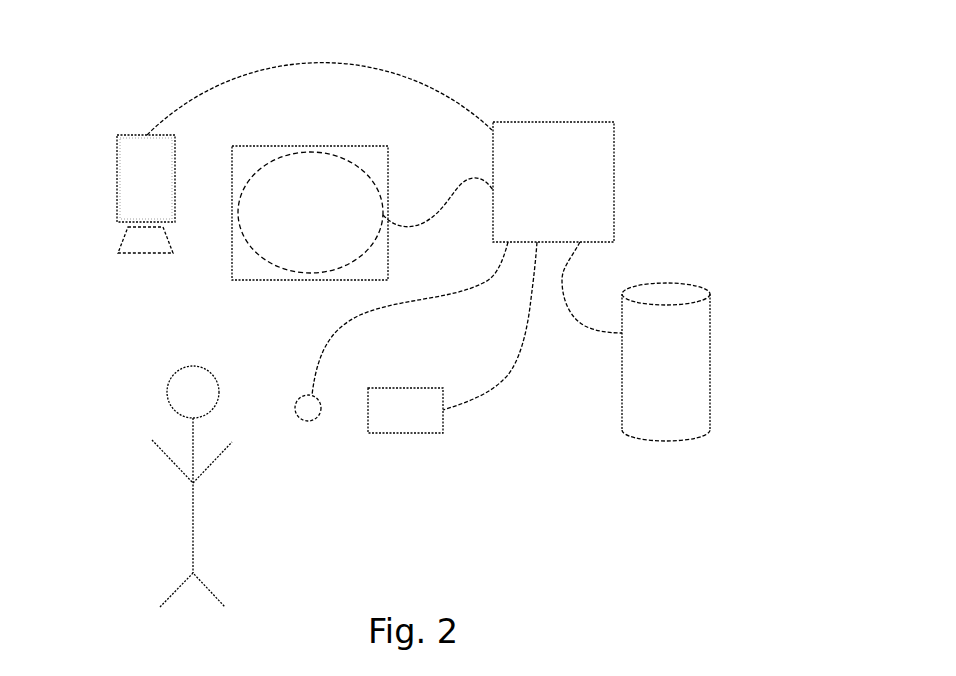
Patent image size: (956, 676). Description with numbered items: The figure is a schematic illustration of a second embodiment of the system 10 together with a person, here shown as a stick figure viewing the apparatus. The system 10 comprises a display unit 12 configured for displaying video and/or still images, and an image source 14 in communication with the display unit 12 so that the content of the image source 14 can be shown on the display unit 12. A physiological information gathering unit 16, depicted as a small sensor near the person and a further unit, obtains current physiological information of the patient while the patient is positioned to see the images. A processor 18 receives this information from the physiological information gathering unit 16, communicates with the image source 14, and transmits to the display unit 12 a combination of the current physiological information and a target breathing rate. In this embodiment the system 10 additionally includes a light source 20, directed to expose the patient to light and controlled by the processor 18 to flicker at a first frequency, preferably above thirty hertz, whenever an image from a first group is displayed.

The system 10 is at (210, 103).
The display unit 12 is at (329, 183).
The image source 14 is at (673, 362).
The physiological information gathering unit 16 is at (310, 413).
The processor 18 is at (565, 168).
The light source 20 is at (128, 158).